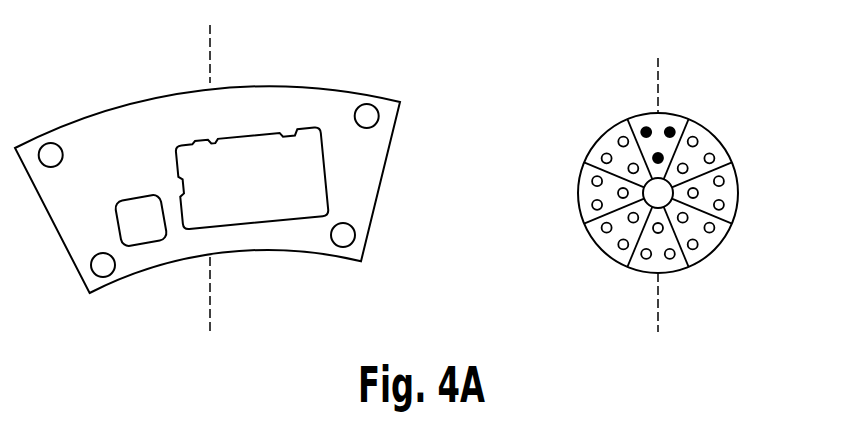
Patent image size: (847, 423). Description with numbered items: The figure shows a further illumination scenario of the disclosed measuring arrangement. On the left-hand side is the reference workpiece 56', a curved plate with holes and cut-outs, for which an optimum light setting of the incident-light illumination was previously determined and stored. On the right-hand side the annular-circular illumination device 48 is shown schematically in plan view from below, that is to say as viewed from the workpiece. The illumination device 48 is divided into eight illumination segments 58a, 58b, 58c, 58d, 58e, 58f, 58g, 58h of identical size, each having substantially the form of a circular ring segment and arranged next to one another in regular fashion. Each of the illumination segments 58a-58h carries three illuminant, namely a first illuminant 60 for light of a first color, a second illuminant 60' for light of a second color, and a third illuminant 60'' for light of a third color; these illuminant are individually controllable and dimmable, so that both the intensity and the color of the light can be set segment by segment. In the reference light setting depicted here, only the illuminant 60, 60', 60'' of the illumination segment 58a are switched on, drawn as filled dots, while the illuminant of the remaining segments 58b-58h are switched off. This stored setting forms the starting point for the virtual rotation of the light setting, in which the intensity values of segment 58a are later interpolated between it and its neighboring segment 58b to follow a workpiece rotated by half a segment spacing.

The reference workpiece 56' is at (207, 175).
The illumination device 48 is at (742, 193).
The illumination segment 58a is at (670, 122).
The illumination segment 58b is at (598, 155).
The illumination segment 58c is at (593, 195).
The illumination segment 58d is at (612, 240).
The illumination segment 58e is at (670, 268).
The illumination segment 58f is at (706, 238).
The illumination segment 58g is at (729, 178).
The illumination segment 58h is at (706, 149).
The first illuminant 60 is at (613, 99).
The second illuminant 60' is at (653, 88).
The third illuminant 60'' is at (610, 116).